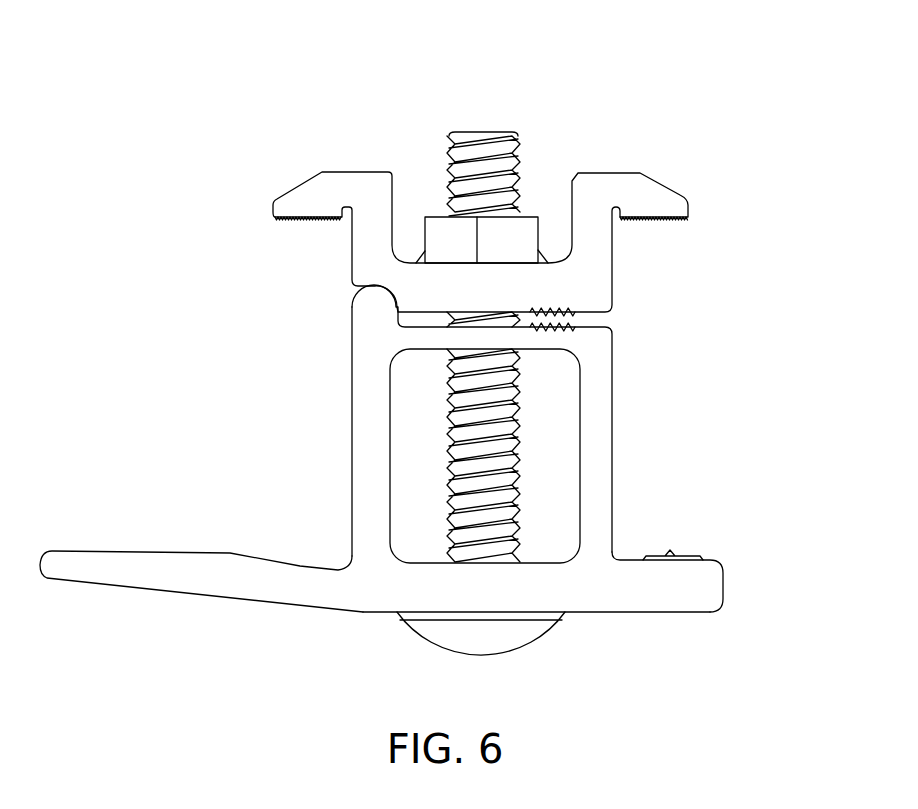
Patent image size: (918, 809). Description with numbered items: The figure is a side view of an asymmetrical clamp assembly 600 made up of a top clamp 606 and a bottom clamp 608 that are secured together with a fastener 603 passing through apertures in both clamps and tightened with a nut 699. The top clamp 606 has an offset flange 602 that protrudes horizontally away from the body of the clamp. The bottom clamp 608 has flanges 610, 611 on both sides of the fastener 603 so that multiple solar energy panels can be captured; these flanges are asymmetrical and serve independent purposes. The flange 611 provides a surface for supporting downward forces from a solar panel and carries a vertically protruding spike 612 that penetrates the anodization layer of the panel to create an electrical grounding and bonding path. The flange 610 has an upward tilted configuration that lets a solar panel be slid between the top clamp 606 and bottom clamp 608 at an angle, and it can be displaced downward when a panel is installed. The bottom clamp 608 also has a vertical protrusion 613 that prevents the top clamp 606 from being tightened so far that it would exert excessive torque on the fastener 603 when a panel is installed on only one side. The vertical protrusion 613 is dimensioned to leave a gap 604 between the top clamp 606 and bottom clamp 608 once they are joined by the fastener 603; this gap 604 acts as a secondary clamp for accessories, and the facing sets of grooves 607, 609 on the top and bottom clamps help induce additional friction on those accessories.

The clamp assembly 600 is at (241, 43).
The offset flange 602 is at (302, 183).
The fastener 603 is at (488, 134).
The nut 699 is at (531, 215).
The top clamp 606 is at (600, 172).
The grooves 607 is at (558, 301).
The gap 604 is at (607, 321).
The grooves 609 is at (558, 339).
The vertical protrusion 613 is at (367, 311).
The spike 612 is at (670, 555).
The bottom clamp 608 is at (731, 578).
The flange 610 is at (200, 597).
The flange 611 is at (672, 612).